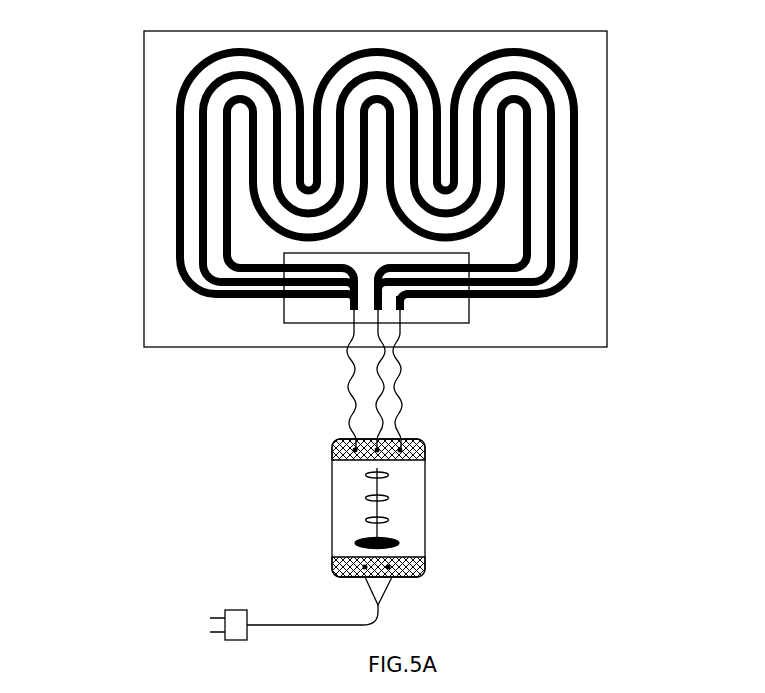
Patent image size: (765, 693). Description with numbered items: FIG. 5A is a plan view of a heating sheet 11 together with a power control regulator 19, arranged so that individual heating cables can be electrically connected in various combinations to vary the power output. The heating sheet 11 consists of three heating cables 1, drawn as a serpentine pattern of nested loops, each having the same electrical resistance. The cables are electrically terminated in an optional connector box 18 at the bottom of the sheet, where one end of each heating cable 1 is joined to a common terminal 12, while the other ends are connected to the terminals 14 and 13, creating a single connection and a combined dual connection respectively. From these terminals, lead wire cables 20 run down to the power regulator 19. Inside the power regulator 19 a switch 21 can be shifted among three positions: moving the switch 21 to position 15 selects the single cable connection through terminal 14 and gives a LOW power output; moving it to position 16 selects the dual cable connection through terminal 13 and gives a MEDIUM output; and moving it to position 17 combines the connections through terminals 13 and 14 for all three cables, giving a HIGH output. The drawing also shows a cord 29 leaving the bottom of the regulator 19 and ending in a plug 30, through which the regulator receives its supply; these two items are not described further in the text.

The heating cable 1 is at (176, 184).
The heating sheet 11 is at (607, 194).
The common terminal 12 is at (352, 310).
The terminal 13 is at (378, 310).
The terminal 14 is at (400, 310).
The switch position 15 is at (388, 520).
The switch position 16 is at (388, 498).
The switch position 17 is at (388, 475).
The connector box 18 is at (284, 317).
The power regulator 19 is at (332, 482).
The lead wire cables 20 is at (350, 402).
The switch 21 is at (356, 543).
The power cord 29 is at (282, 625).
The plug 30 is at (243, 610).